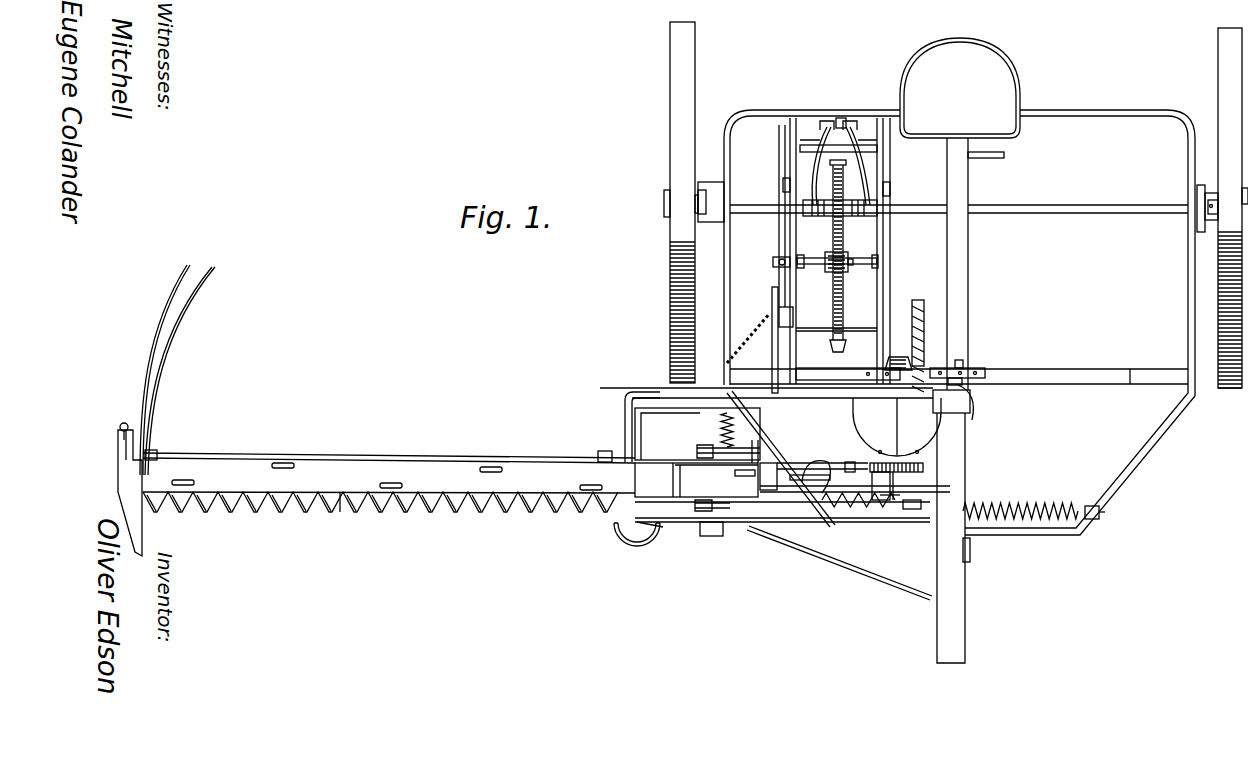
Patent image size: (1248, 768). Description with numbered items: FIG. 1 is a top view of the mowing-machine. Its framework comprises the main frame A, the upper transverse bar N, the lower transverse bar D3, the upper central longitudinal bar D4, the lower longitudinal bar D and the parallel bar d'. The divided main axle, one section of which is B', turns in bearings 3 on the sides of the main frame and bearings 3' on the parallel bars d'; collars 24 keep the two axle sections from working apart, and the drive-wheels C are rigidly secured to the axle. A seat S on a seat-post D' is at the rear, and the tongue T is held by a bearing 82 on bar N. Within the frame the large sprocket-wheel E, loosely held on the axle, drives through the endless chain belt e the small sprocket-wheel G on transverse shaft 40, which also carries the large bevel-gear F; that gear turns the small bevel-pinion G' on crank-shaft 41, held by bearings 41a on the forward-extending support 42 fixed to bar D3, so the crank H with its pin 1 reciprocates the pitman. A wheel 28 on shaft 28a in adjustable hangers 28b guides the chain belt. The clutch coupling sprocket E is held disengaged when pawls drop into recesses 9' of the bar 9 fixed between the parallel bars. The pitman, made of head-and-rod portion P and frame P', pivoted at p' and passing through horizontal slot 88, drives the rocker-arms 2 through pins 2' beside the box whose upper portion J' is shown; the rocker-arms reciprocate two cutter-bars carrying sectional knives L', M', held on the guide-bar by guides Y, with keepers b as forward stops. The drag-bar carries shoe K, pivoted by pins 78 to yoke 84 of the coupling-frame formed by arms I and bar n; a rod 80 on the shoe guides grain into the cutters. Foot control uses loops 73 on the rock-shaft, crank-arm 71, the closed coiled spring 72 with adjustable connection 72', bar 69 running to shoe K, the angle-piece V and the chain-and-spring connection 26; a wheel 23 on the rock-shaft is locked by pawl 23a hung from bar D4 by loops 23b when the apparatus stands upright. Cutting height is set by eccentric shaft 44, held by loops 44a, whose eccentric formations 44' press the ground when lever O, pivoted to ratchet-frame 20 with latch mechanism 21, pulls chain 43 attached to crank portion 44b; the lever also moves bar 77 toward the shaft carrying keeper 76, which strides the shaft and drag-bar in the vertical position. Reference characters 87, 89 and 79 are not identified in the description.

The drive-wheels C is at (703, 68).
The lower longitudinal bar D is at (959, 251).
The lower transverse bar D3 is at (1077, 374).
The upper central longitudinal bar D4 is at (968, 274).
The main frame A is at (1170, 420).
The seat S is at (1016, 88).
The loops 73 is at (1004, 157).
The tongue T is at (966, 605).
The main axle section B' is at (959, 198).
The collars 24 is at (1197, 205).
The bearings 3 is at (933, 235).
The seat-post D' is at (765, 251).
The parallel bar d' is at (898, 251).
The bearings 3' is at (839, 187).
The bar 9 is at (855, 152).
The recesses 9' is at (843, 146).
The spring arm connection 87 is at (849, 118).
The large sprocket-wheel E is at (846, 250).
The latch mechanism 21 is at (782, 232).
The wheel 28 is at (828, 268).
The hangers 28b is at (878, 262).
The shaft 28a is at (865, 269).
The ratchet-frame 20 is at (770, 255).
The lever O is at (778, 263).
The bar 77 is at (772, 296).
The endless chain belt e is at (843, 292).
The small sprocket-wheel G is at (846, 326).
The small bevel-pinion G' is at (896, 355).
The large bevel-gear F is at (918, 299).
The transverse shaft 40 is at (891, 340).
The chain 43 is at (760, 333).
The wheel 23 is at (975, 368).
The pawl 23a is at (965, 348).
The loops 23b is at (972, 398).
The upper transverse bar N is at (990, 402).
The bearing 82 is at (968, 410).
The bearings 41a is at (852, 364).
The arms I is at (848, 399).
The forward-extending support 42 is at (892, 436).
The crank-shaft 41 is at (893, 432).
The crank H is at (905, 474).
The pin 1 is at (918, 478).
The pitman head and rod portion P is at (829, 536).
The pitman frame P' is at (754, 518).
The angle-piece V is at (812, 463).
The horizontal slot 88 is at (847, 462).
The coil spring 89 is at (815, 520).
The connection 26 is at (886, 520).
The crank-arm 71 is at (908, 515).
The yoke 84 is at (762, 430).
The bar n is at (852, 568).
The bar 69 is at (762, 528).
The pins 78 is at (710, 538).
The rod 80 is at (640, 546).
The shoe K is at (697, 452).
The rocker-arms 2 is at (710, 479).
The pins 2' is at (688, 481).
The upper portion of box J' is at (726, 466).
The pivotal connection p' is at (740, 482).
The eccentric shaft 44 is at (389, 463).
The sectional knives L' is at (380, 515).
The sectional knives M' is at (352, 514).
The guides Y is at (493, 466).
The loops 44a is at (158, 450).
The eccentric formations 44' is at (376, 427).
The crank portion 44b is at (660, 387).
The keeper 76 is at (626, 392).
The keepers b is at (118, 444).
The closed coiled spring 72 is at (1020, 500).
The adjustable connection 72' is at (1116, 506).
The bracket 79 is at (971, 553).